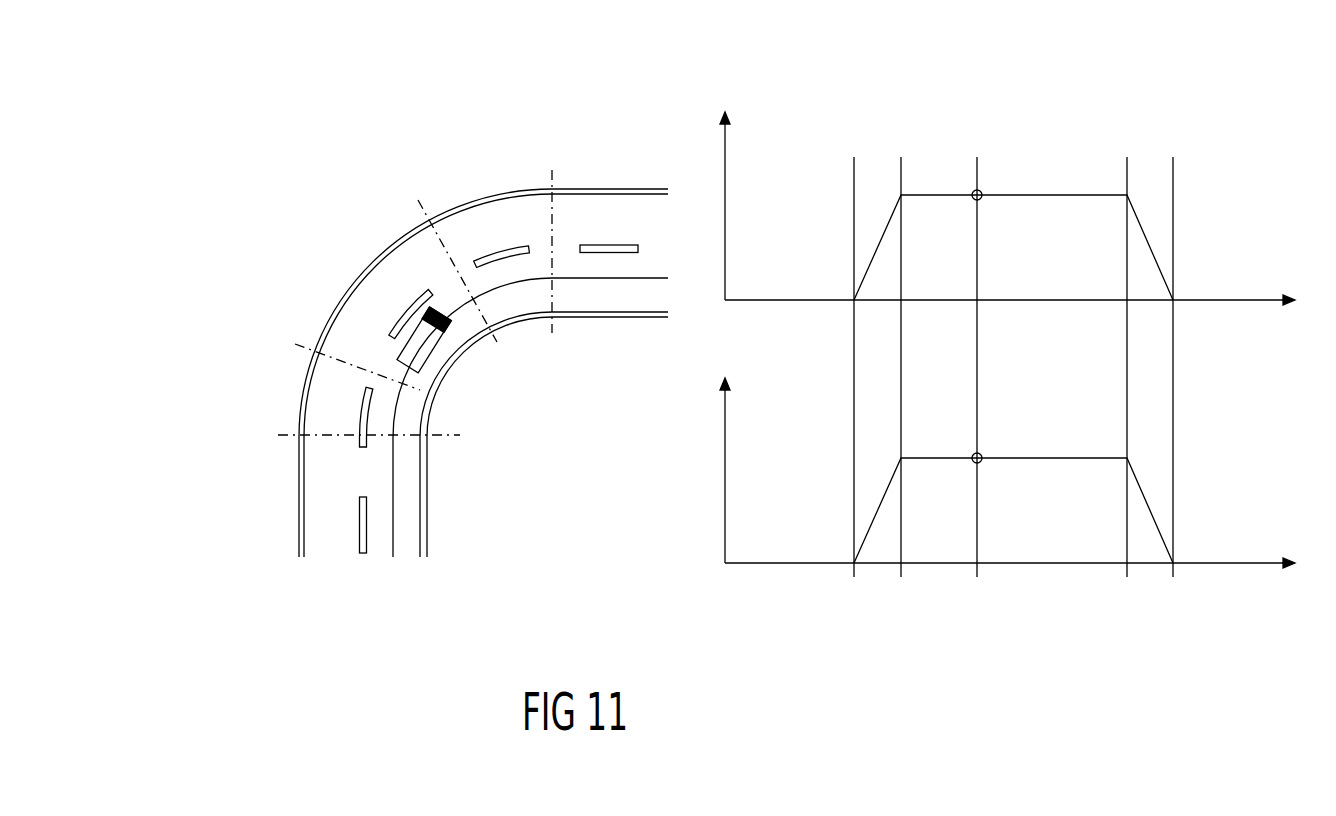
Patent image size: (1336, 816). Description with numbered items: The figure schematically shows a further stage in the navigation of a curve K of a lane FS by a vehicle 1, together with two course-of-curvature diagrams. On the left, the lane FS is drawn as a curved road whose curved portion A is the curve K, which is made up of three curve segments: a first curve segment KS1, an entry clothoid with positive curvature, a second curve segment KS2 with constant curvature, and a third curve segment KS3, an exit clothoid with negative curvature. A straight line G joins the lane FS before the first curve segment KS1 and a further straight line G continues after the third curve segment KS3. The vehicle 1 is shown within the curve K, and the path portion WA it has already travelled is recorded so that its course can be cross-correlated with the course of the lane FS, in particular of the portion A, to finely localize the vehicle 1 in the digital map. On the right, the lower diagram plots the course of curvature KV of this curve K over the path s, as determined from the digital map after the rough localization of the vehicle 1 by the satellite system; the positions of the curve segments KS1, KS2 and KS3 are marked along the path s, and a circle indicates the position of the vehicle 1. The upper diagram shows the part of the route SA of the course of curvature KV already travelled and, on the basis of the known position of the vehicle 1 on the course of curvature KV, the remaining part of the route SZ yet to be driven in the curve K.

The vehicle 1 is at (430, 338).
The portion of the lane A is at (426, 312).
The straight line G is at (607, 172).
The lane FS is at (627, 290).
The path portion travelled by the vehicle WA is at (395, 425).
The curve K is at (478, 403).
The first curve segment KS1 is at (278, 387).
The second curve segment KS2 is at (350, 242).
The third curve segment KS3 is at (476, 172).
The course of curvature KV is at (743, 325).
The path s is at (1018, 428).
The part of the route already travelled SA is at (947, 188).
The remaining part of the route yet to be driven SZ is at (1090, 190).